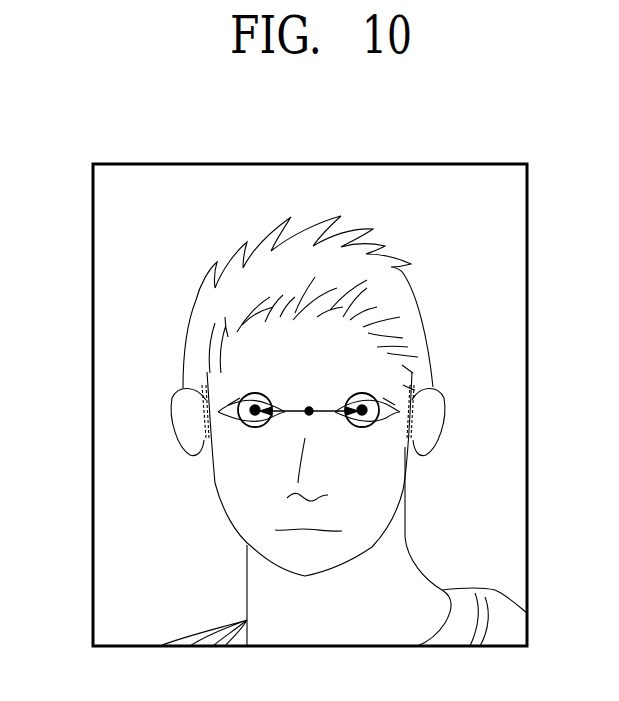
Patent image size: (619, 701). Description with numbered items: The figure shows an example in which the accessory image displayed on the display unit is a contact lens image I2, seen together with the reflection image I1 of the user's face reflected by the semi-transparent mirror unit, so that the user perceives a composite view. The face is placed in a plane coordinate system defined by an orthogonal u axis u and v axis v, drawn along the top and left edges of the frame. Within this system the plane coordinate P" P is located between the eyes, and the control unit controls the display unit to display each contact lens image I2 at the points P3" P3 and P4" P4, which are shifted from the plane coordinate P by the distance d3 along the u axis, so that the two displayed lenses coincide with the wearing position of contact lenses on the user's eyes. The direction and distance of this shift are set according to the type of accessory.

The u-axis u is at (93, 164).
The v-axis v is at (93, 164).
The reflection image I1 is at (210, 484).
The image corresponding to an accessory I2 is at (232, 406).
The point P3" P3 is at (254, 424).
The point P4" P4 is at (361, 424).
The plane coordinate P"(u", v") P is at (305, 424).
The shift distance d3 is at (309, 398).